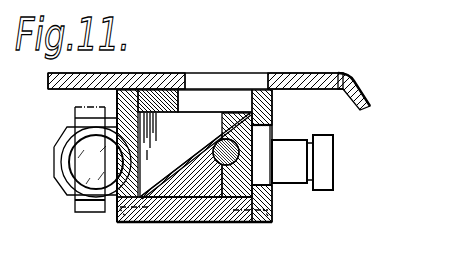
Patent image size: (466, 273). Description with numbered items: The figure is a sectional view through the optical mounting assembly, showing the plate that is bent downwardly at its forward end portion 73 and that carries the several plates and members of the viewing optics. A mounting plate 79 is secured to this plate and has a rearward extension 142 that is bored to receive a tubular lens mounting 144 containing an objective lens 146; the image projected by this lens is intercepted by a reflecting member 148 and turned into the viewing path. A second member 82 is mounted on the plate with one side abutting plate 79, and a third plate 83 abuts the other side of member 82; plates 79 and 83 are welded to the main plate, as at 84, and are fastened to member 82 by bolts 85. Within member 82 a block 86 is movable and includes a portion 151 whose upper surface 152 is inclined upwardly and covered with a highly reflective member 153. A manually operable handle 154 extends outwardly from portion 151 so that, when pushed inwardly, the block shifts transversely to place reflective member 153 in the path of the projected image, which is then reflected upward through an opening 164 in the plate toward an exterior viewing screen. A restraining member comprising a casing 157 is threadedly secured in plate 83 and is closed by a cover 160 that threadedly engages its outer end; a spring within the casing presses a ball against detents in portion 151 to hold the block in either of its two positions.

The forward end portion 73 is at (360, 80).
The mounting plate 79 is at (129, 222).
The second member 82 is at (190, 92).
The third plate 83 is at (271, 192).
The welding 84 is at (122, 77).
The bolts 85 is at (116, 214).
The block 86 is at (168, 92).
The rearward extension 142 is at (70, 136).
The tubular lens mounting 144 is at (65, 156).
The objective lens 146 is at (82, 173).
The reflecting member 148 is at (90, 208).
The portion 151 is at (239, 192).
The upper surface 152 is at (145, 183).
The reflective member 153 is at (206, 146).
The manually operable handle 154 is at (217, 222).
The casing 157 is at (287, 148).
The cover 160 is at (333, 145).
The opening 164 is at (237, 83).